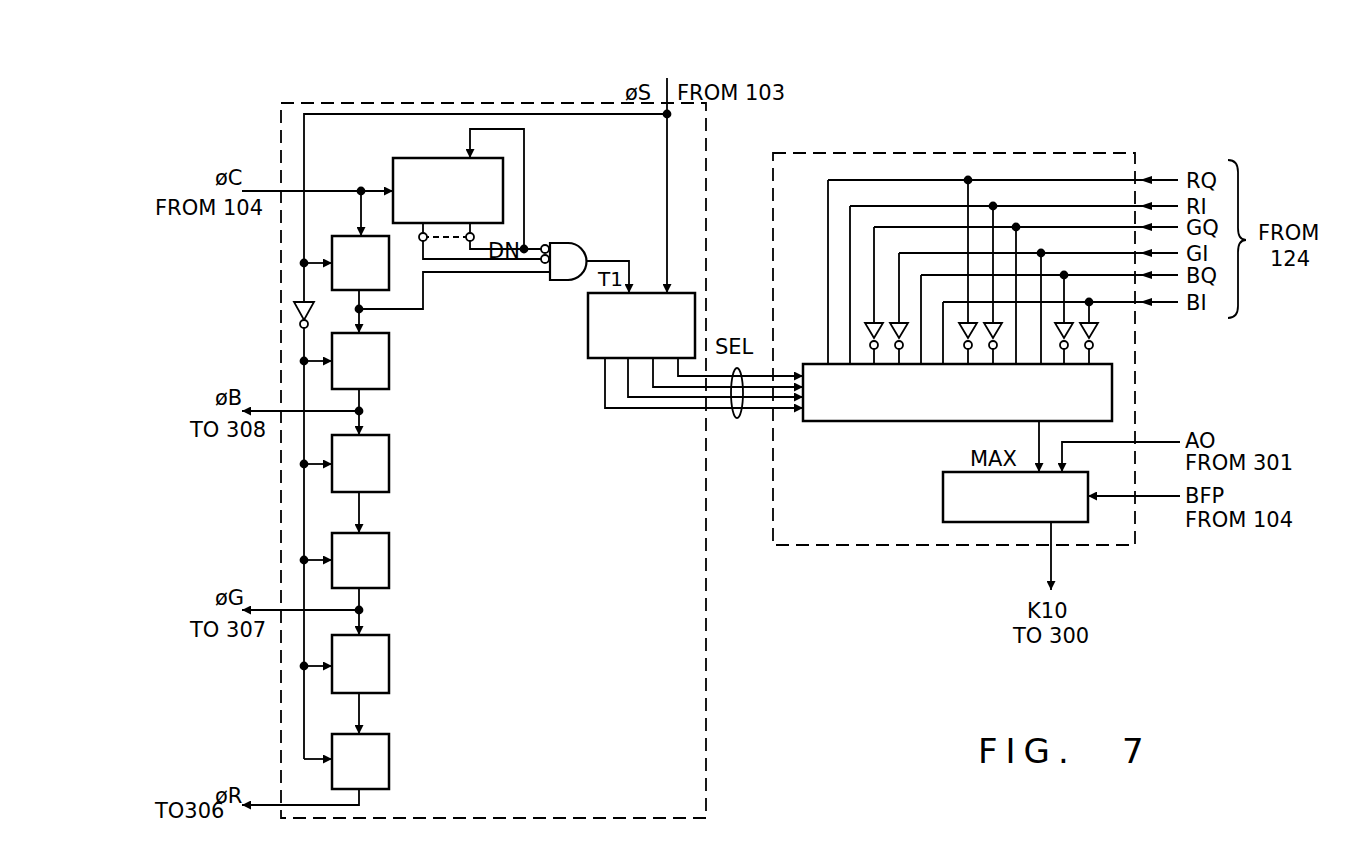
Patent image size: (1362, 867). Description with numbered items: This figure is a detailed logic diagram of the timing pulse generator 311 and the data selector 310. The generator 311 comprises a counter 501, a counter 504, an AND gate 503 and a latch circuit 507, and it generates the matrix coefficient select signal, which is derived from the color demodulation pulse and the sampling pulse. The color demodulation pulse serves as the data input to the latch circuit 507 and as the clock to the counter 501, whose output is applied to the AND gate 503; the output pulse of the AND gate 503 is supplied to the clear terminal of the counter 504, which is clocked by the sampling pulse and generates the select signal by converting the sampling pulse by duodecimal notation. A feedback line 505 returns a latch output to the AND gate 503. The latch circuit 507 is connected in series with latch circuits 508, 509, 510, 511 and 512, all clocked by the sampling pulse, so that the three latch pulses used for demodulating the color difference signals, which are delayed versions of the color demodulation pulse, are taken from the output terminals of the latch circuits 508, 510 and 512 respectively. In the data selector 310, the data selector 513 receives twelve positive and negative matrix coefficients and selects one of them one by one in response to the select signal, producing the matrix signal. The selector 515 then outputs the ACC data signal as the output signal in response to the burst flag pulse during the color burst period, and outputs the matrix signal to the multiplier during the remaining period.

The data selector 310 is at (903, 153).
The timing pulse generator 311 is at (707, 140).
The counter 501 is at (411, 166).
The AND gate 503 is at (569, 254).
The counter 504 is at (589, 332).
The feedback line 505 is at (423, 293).
The latch circuit 507 is at (341, 243).
The latch circuit 508 is at (377, 378).
The latch circuit 509 is at (377, 480).
The latch circuit 510 is at (377, 576).
The latch circuit 511 is at (377, 681).
The latch circuit 512 is at (377, 777).
The data selector 513 is at (830, 422).
The selector 515 is at (944, 500).